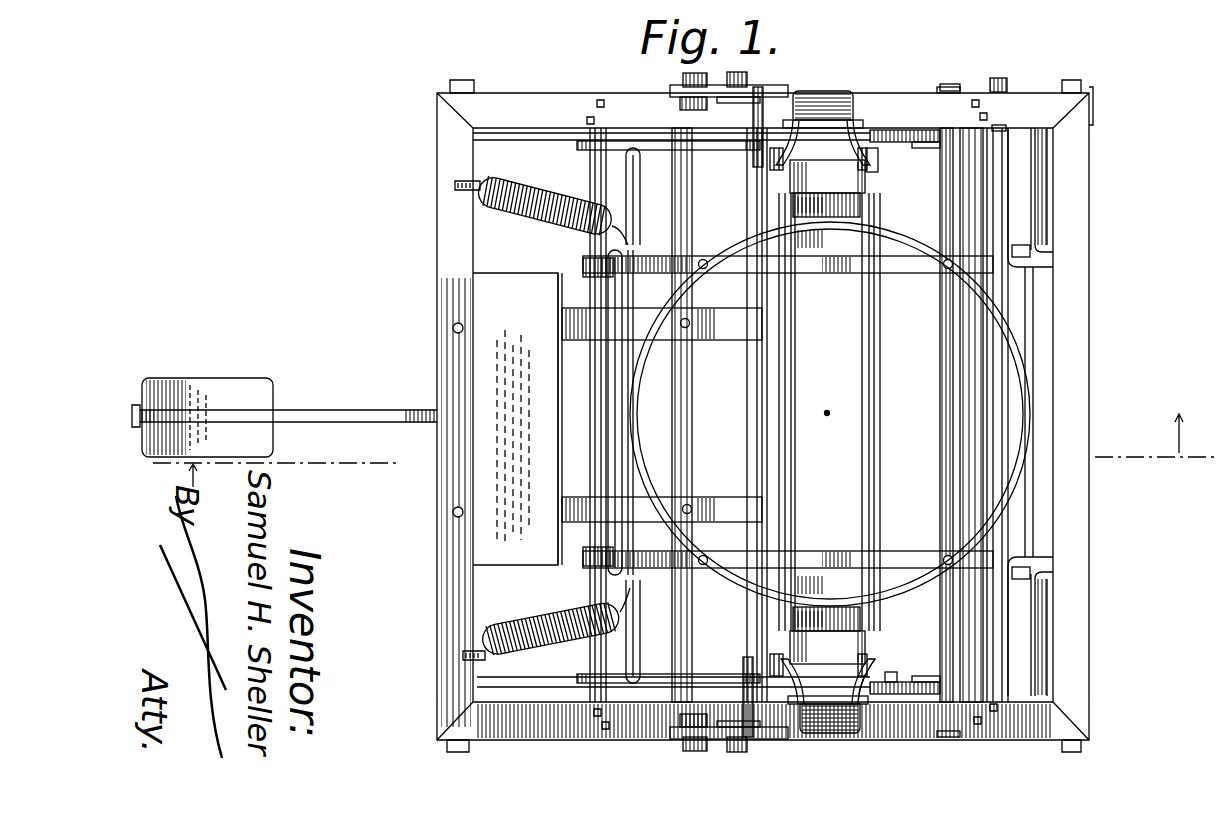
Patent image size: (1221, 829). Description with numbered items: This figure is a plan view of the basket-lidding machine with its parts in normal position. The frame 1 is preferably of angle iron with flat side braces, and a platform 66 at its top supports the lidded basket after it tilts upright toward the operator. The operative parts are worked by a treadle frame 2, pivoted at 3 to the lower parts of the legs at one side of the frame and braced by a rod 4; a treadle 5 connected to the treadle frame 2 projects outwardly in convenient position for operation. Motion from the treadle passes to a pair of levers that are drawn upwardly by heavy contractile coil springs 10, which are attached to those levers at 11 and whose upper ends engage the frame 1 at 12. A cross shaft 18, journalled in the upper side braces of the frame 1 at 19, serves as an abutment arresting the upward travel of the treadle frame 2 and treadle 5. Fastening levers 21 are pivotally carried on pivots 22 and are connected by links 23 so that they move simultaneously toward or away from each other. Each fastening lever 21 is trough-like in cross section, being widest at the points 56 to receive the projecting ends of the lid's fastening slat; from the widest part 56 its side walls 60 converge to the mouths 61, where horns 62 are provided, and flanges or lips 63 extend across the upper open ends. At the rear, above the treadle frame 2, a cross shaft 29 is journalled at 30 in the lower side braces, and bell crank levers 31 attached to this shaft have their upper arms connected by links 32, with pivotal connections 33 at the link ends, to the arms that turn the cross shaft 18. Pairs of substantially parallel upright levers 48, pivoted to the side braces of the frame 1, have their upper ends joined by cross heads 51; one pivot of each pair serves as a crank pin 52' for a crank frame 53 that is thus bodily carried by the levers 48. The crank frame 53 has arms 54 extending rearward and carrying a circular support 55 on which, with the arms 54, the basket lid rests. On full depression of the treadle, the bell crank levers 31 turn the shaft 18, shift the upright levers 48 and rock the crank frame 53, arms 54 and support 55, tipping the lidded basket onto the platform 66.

The frame 1 is at (415, 177).
The treadle frame 2 is at (354, 420).
The pivot 3 is at (684, 447).
The rod 4 is at (1008, 318).
The treadle 5 is at (207, 417).
The contractile coil springs 10 is at (545, 194).
The spring attachment point 11 is at (613, 236).
The spring engagement point 12 is at (456, 190).
The cross shaft 18 is at (766, 357).
The journal 19 is at (765, 140).
The fastening levers 21 is at (827, 419).
The pivots 22 is at (873, 172).
The links 23 is at (880, 474).
The cross shaft 29 is at (1000, 211).
The journal 30 is at (1002, 84).
The bell crank levers 31 is at (1028, 132).
The links 32 is at (902, 132).
The pivotal connections 33 is at (938, 675).
The upright levers 48 is at (930, 95).
The cross heads 51 is at (705, 95).
The crank pin 52' is at (668, 414).
The crank frame 53 is at (592, 237).
The arms 54 is at (926, 272).
The circular support 55 is at (1030, 407).
The widest points 56 is at (768, 158).
The side walls 60 is at (796, 130).
The mouths 61 is at (845, 722).
The horns 62 is at (787, 100).
The flanges or lips 63 is at (826, 97).
The platform 66 is at (565, 310).